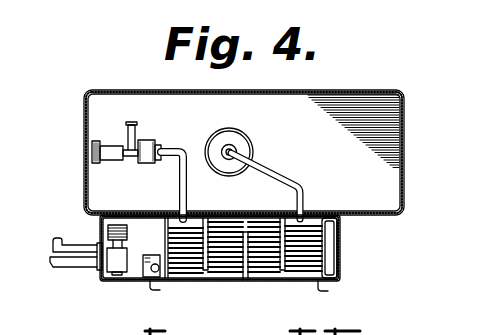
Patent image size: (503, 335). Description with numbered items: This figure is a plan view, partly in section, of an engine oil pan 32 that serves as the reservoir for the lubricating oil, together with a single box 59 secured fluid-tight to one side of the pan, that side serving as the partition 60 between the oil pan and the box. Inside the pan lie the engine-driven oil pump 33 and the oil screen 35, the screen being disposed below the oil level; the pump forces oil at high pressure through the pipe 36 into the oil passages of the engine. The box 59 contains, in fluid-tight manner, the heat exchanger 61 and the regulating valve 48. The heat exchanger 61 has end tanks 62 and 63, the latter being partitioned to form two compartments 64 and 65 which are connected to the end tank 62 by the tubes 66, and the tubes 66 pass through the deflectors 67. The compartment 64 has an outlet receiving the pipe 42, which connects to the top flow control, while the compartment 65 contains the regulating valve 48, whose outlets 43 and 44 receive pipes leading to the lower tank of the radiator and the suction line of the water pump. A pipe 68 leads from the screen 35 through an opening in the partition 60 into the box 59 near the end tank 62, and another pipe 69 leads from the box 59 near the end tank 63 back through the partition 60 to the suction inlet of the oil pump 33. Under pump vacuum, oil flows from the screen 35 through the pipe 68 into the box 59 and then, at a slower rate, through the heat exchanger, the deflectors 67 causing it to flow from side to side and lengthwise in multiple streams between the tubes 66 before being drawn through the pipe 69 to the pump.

The oil pan 32 is at (374, 88).
The oil pump 33 is at (150, 141).
The oil screen 35 is at (249, 145).
The pipe 36 is at (127, 131).
The pipe 42 is at (155, 263).
The outlet 43 is at (53, 261).
The outlet 44 is at (53, 247).
The regulating valve 48 is at (113, 262).
The box 59 is at (320, 283).
The partition 60 is at (237, 215).
The heat exchanger 61 is at (349, 233).
The end tank 62 is at (100, 231).
The end tank 63 is at (332, 259).
The compartment 64 is at (155, 284).
The compartment 65 is at (137, 266).
The tubes 66 is at (262, 264).
The deflectors 67 is at (244, 272).
The pipe 68 is at (304, 183).
The pipe 69 is at (179, 186).